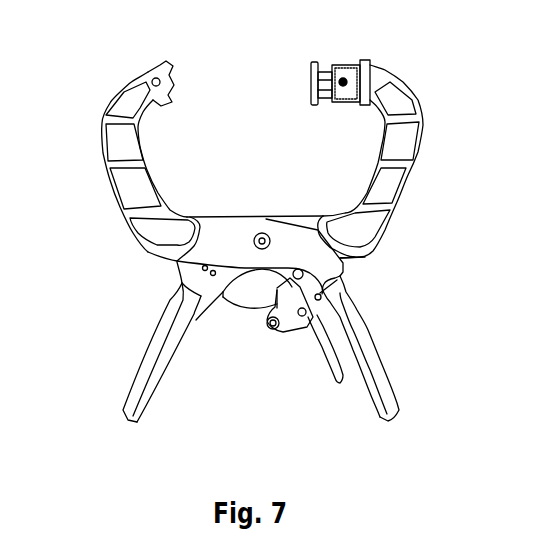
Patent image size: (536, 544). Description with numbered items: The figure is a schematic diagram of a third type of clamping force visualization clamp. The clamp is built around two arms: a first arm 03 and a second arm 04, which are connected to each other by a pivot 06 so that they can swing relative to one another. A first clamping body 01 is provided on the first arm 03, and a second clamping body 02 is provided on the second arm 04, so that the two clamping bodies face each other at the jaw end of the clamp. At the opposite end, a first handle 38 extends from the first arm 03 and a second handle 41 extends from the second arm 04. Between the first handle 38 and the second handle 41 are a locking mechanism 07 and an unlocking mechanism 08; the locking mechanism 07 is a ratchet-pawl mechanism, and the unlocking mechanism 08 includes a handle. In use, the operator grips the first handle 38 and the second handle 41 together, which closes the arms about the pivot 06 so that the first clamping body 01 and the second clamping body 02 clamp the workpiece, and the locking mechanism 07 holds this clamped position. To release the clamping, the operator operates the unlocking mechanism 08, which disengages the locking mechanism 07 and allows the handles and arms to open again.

The first clamping body 01 is at (318, 62).
The second clamping body 02 is at (168, 62).
The first arm 03 is at (405, 183).
The second arm 04 is at (113, 190).
The pivot 06 is at (270, 244).
The locking mechanism 07 is at (258, 318).
The unlocking mechanism 08 is at (320, 336).
The first handle 38 is at (148, 348).
The second handle 41 is at (372, 352).